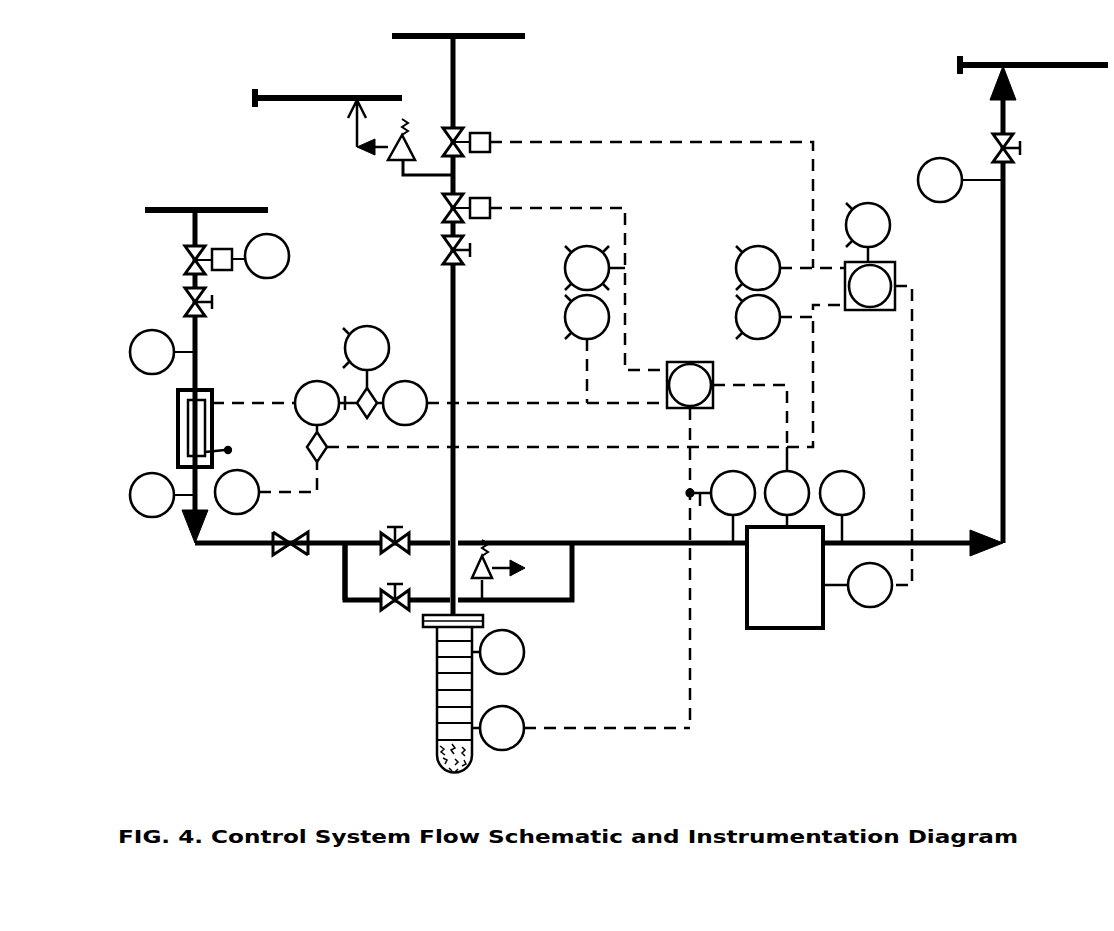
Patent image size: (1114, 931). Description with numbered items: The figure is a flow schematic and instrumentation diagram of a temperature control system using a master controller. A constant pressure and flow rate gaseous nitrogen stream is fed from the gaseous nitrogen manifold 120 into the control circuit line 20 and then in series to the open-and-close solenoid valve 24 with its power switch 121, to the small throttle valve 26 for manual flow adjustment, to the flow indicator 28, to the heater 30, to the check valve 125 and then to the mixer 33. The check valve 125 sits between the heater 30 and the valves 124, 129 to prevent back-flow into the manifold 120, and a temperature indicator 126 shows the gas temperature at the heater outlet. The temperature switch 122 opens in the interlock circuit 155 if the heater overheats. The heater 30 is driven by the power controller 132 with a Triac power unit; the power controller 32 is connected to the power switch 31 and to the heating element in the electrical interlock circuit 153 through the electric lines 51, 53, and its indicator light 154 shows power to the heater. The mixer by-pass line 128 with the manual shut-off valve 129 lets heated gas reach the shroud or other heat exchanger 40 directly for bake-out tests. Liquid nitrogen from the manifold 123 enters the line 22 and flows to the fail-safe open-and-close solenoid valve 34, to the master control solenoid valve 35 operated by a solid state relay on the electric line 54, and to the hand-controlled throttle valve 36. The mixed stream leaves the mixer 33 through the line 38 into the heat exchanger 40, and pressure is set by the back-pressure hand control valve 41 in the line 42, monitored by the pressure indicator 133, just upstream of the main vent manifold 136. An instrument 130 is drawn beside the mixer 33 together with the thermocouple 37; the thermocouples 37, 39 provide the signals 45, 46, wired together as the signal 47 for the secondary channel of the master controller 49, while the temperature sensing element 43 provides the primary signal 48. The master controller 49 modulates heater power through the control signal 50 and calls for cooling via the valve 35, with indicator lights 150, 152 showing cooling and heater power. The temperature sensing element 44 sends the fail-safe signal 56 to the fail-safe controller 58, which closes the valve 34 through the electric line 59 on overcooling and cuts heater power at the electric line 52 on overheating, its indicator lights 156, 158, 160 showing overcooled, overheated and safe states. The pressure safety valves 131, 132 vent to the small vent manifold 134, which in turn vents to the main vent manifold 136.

The control circuit line 20 is at (193, 230).
The line 22 is at (458, 116).
The open-and-close solenoid valve 24 is at (190, 252).
The small throttle valve 26 is at (190, 297).
The flow indicator 28 is at (130, 347).
The heater 30 is at (208, 420).
The power switch 31 is at (316, 381).
The power controller 32 is at (418, 390).
The mixer 33 is at (435, 667).
The fail-safe open-and-close solenoid valve 34 is at (466, 154).
The master control open-and-close solenoid valve 35 is at (466, 194).
The hand-controlled throttle valve 36 is at (466, 238).
The thermocouple 37 is at (516, 712).
The line 38 is at (592, 543).
The thermocouple 39 is at (720, 479).
The shroud or other heat exchanger 40 is at (747, 580).
The back-pressure hand control valve 41 is at (1013, 134).
The line 42 is at (1006, 295).
The temperature sensing element 43 is at (774, 479).
The temperature sensing element 44 is at (866, 607).
The signal 45 is at (632, 722).
The signal 46 is at (699, 508).
The signal 47 is at (693, 418).
The signal 48 is at (785, 436).
The master controller 49 is at (710, 392).
The control signal 50 is at (555, 400).
The electric line 51 is at (347, 415).
The electric line 52 is at (486, 447).
The electric line 53 is at (253, 394).
The electric line 54 is at (627, 288).
The fail-safe control temperature signal 56 is at (914, 400).
The fail-safe controller 58 is at (868, 310).
The electric line 59 is at (816, 152).
The gaseous nitrogen manifold 120 is at (160, 210).
The power switch 121 is at (289, 254).
The temperature switch 122 is at (247, 480).
The manifold 123 is at (418, 38).
The valve 124 is at (378, 607).
The check valve 125 is at (272, 553).
The temperature indicator 126 is at (130, 496).
The mixer by-pass line 128 is at (348, 540).
The manual shut-off valve 129 is at (405, 538).
The temperature indicator 130 is at (524, 646).
The pressure safety valve 131 is at (494, 558).
The pressure safety valve 132 is at (396, 161).
The pressure indicator 133 is at (938, 202).
The small vent manifold 134 is at (324, 92).
The main vent manifold 136 is at (1092, 69).
The indicator light 150 is at (587, 246).
The indicator light 152 is at (565, 317).
The electrical interlock circuit 153 is at (372, 415).
The indicator light 154 is at (360, 330).
The interlock circuit 155 is at (322, 460).
The indicator light 156 is at (758, 246).
The indicator light 158 is at (736, 314).
The indicator light 160 is at (866, 204).